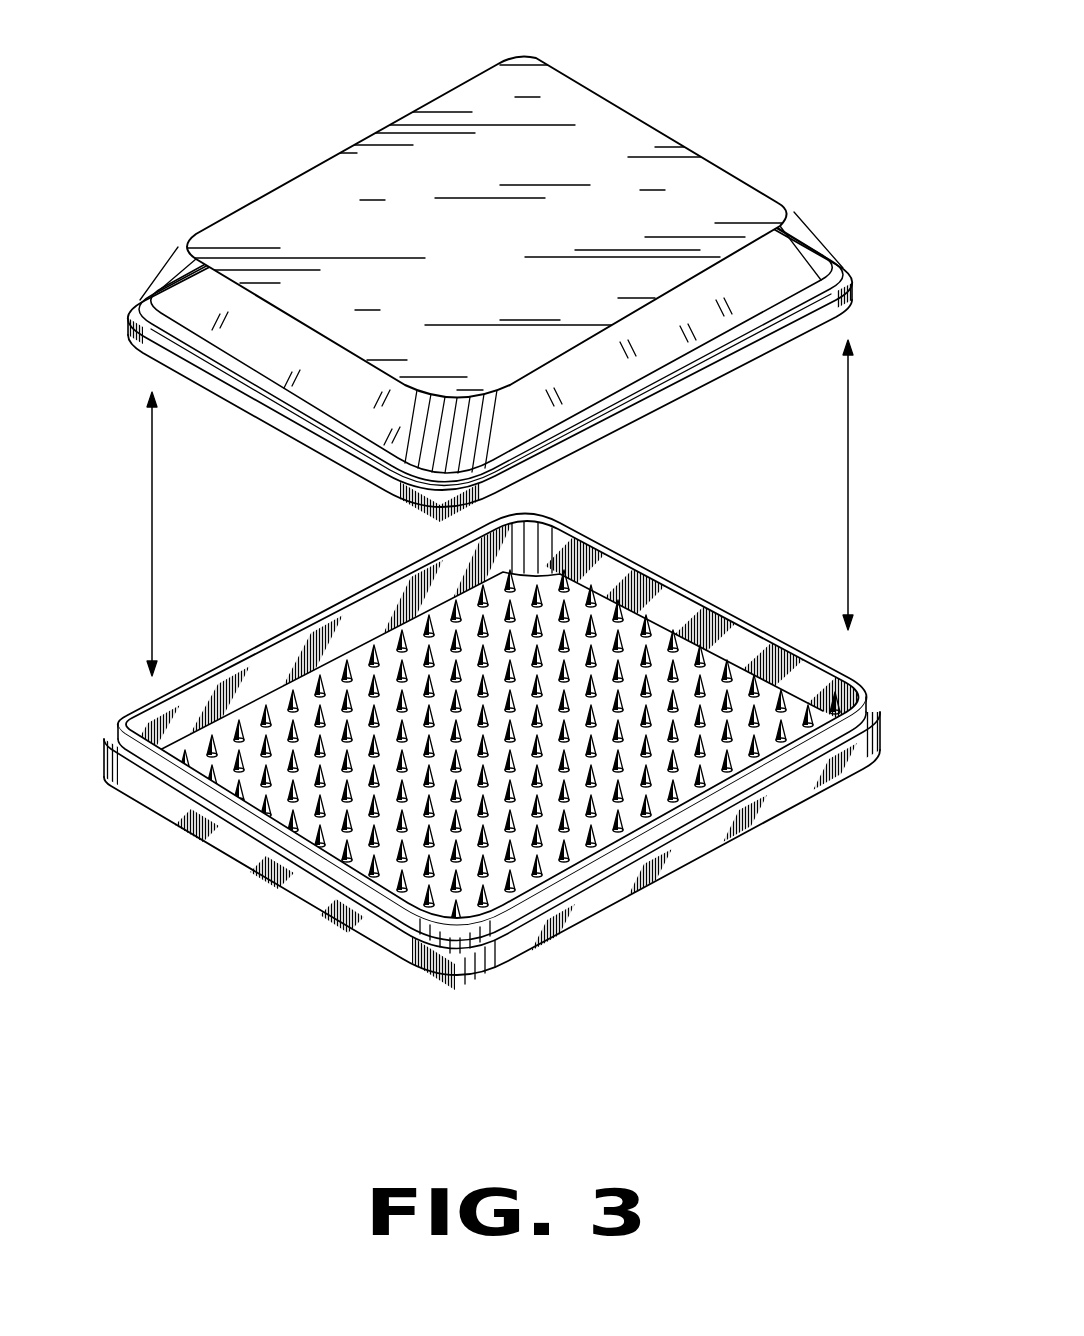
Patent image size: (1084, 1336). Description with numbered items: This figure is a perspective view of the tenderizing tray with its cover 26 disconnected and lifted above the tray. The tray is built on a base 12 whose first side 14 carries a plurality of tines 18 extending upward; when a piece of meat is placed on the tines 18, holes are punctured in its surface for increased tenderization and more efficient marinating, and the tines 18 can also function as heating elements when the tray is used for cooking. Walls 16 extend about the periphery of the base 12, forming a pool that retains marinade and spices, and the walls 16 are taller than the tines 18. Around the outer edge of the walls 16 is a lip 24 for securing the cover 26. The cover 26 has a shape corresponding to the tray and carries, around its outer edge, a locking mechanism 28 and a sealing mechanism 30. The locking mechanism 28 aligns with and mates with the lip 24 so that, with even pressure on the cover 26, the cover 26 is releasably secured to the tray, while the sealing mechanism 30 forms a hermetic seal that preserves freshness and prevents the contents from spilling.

The base 12 is at (283, 793).
The first side 14 is at (222, 771).
The walls 16 is at (357, 622).
The tines 18 is at (645, 860).
The lip 24 is at (492, 782).
The cover 26 is at (527, 289).
The locking mechanism 28 is at (870, 298).
The sealing mechanism 30 is at (596, 445).